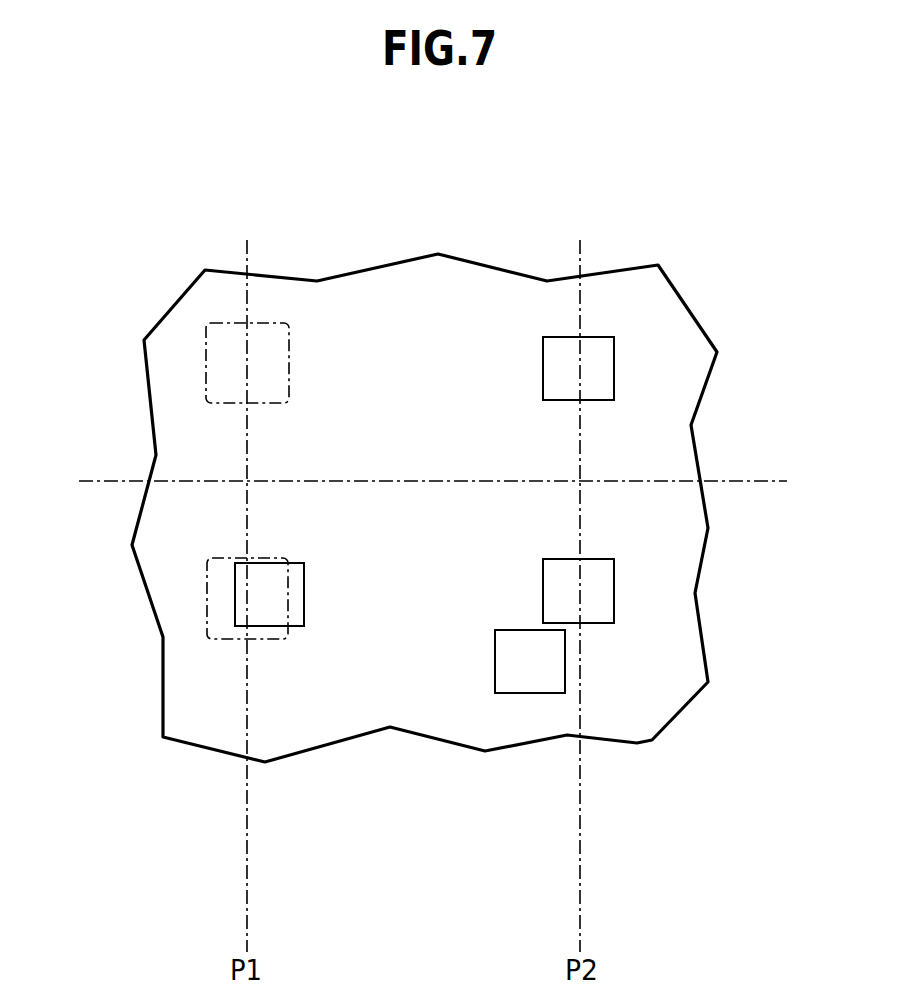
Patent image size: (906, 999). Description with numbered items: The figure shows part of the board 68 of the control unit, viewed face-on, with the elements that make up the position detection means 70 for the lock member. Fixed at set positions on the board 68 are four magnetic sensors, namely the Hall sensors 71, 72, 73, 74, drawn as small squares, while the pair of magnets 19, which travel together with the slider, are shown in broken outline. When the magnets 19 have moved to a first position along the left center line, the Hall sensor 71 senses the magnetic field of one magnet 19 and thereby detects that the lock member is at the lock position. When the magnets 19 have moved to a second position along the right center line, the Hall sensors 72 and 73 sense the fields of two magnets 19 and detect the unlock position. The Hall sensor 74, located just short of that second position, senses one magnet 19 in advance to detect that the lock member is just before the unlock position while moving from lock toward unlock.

The magnet 19 is at (205, 348).
The board 68 is at (165, 528).
The position detection means 70 is at (227, 650).
The Hall sensor 71 is at (300, 562).
The Hall sensor 72 is at (596, 562).
The Hall sensor 73 is at (543, 374).
The Hall sensor 74 is at (512, 633).